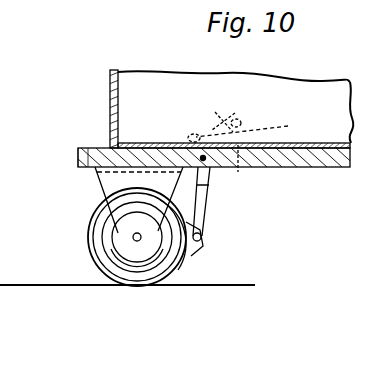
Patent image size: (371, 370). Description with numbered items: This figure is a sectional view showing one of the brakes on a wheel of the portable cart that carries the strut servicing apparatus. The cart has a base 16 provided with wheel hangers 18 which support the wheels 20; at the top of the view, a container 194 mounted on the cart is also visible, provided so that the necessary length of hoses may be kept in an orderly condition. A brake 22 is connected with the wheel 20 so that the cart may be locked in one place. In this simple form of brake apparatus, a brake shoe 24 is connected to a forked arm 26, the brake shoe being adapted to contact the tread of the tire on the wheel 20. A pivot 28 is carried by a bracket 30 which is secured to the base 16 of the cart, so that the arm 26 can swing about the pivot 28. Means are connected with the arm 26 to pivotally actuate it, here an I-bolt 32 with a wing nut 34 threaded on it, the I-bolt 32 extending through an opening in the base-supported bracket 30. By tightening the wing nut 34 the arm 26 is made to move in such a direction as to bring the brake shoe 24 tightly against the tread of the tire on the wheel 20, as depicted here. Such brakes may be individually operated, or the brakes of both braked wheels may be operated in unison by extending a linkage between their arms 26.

The container 194 is at (135, 90).
The base 16 is at (305, 168).
The wheel hanger 18 is at (122, 190).
The wheel 20 is at (158, 273).
The brake 22 is at (204, 231).
The brake shoe 24 is at (200, 247).
The forked arm 26 is at (206, 200).
The pivot 28 is at (206, 161).
The bracket 30 is at (254, 125).
The I-bolt 32 is at (213, 128).
The wing nut 34 is at (231, 114).